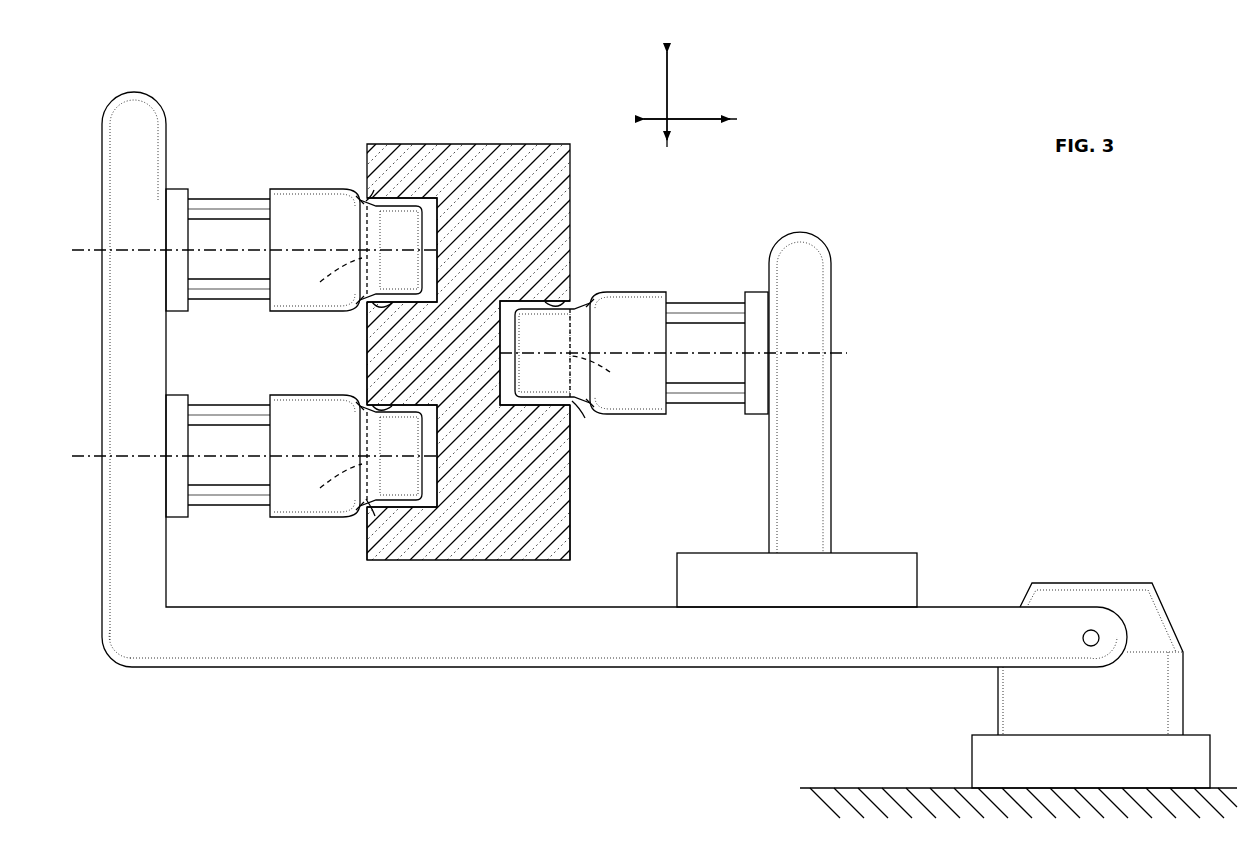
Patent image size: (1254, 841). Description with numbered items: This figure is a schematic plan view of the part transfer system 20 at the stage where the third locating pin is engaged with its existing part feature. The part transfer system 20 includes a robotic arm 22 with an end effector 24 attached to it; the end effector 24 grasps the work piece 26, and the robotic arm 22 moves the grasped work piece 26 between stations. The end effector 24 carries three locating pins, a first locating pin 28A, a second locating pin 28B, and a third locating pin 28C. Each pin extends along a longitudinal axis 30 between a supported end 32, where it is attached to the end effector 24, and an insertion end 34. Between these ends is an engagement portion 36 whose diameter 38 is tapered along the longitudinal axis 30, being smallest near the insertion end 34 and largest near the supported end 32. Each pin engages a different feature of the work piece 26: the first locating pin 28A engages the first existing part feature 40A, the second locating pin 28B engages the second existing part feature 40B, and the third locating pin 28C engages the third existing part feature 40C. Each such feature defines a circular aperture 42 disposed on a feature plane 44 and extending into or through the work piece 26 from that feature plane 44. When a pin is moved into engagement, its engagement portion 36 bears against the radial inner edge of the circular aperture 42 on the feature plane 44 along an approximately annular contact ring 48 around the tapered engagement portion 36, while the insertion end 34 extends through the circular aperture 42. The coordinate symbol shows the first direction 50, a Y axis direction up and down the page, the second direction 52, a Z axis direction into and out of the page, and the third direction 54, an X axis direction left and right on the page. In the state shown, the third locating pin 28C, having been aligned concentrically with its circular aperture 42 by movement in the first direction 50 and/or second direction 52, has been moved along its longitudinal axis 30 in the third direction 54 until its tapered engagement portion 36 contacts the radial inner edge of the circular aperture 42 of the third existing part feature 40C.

The part transfer system 20 is at (1002, 303).
The robotic arm 22 is at (1165, 600).
The end effector 24 is at (398, 668).
The work piece 26 is at (480, 144).
The first locating pin 28A is at (306, 188).
The second locating pin 28B is at (278, 395).
The third locating pin 28C is at (650, 292).
The longitudinal axis 30 is at (83, 246).
The supported end 32 is at (268, 257).
The insertion end 34 is at (437, 228).
The engagement portion 36 is at (362, 204).
The diameter 38 is at (360, 238).
The first existing part feature 40A is at (388, 304).
The second existing part feature 40B is at (390, 404).
The third existing part feature 40C is at (568, 300).
The circular aperture 42 is at (366, 198).
The feature plane 44 is at (367, 525).
The annular contact ring 48 is at (464, 381).
The first direction 50 is at (668, 72).
The second direction 52 is at (672, 115).
The third direction 54 is at (700, 121).